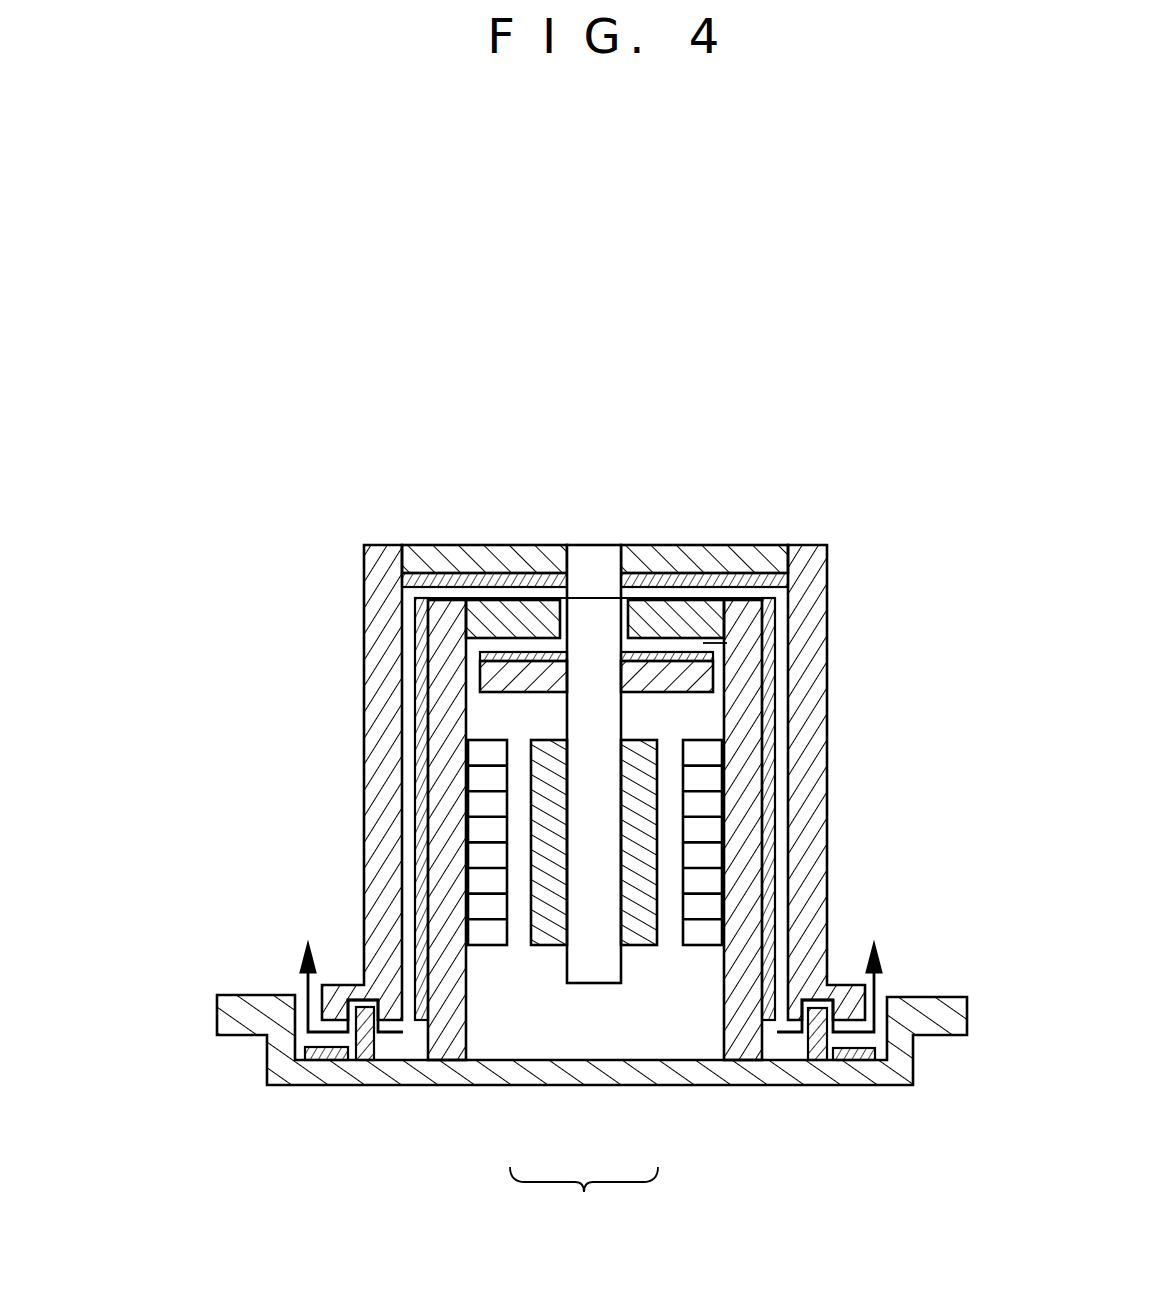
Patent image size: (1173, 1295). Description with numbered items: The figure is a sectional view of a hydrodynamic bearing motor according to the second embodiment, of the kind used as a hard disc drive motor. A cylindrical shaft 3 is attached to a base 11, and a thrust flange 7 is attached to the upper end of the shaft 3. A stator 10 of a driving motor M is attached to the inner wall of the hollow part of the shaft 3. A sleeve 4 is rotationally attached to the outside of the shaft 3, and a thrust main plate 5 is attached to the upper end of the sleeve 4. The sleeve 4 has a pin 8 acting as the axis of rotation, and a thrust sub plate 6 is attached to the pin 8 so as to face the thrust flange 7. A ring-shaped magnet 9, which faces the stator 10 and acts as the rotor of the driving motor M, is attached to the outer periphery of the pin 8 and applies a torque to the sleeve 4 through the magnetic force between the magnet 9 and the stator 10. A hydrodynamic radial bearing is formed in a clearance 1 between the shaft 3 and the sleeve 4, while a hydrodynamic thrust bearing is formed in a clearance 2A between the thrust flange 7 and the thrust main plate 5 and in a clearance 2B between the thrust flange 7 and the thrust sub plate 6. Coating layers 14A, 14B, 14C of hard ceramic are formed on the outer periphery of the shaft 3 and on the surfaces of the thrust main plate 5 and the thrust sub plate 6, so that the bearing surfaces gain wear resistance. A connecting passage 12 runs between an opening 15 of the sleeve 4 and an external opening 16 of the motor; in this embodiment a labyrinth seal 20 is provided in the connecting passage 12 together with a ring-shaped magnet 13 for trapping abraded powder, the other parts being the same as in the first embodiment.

The clearance 1 is at (430, 822).
The clearance 2A is at (683, 590).
The clearance 2B is at (727, 642).
The shaft 3 is at (415, 653).
The sleeve 4 is at (380, 717).
The thrust main plate 5 is at (428, 550).
The thrust sub plate 6 is at (522, 655).
The thrust flange 7 is at (510, 608).
The pin 8 is at (597, 575).
The magnet 9 is at (543, 947).
The stator 10 is at (700, 945).
The base 11 is at (848, 1072).
The connecting passage 12 is at (892, 992).
The magnet 13 is at (328, 1062).
The coating layer 14A is at (765, 773).
The coating layer 14B is at (755, 575).
The coating layer 14C is at (703, 657).
The opening 15 is at (405, 1022).
The external opening 16 is at (300, 990).
The labyrinth seal 20 is at (815, 1062).
The driving motor M is at (584, 1198).